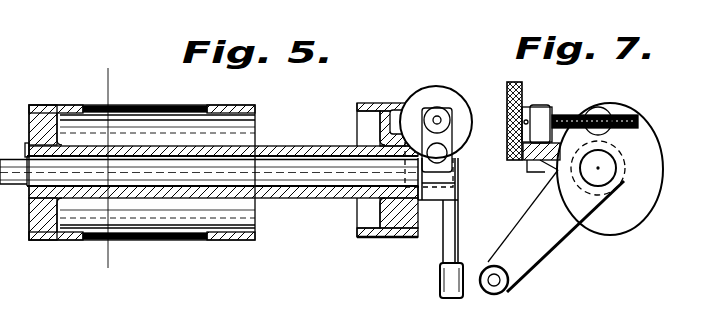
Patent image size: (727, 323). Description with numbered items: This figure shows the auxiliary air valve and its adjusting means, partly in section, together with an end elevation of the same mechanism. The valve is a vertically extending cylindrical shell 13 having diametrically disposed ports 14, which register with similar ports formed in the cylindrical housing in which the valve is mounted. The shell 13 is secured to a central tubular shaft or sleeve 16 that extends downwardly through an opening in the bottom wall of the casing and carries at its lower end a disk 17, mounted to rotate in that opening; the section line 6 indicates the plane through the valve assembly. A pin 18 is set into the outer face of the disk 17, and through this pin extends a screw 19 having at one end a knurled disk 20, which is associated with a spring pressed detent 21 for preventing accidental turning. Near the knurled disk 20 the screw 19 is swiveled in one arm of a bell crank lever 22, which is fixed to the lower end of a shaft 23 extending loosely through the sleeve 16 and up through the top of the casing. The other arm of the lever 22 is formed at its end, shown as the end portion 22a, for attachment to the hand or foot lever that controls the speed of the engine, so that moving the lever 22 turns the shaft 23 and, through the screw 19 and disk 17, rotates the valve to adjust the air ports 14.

In FIG. 5, the section line 6 is at (113, 170).
In FIG. 5, the cylindrical shell 13 is at (253, 122).
In FIG. 5, the ports 14 is at (150, 108).
In FIG. 5, the tubular shaft or sleeve 16 is at (283, 200).
In FIG. 5, the disk 17 is at (400, 238).
In FIG. 7, the disk 17 is at (623, 223).
In FIG. 7, the pin 18 is at (598, 110).
In FIG. 7, the screw 19 is at (614, 126).
In FIG. 5, the knurled disk 20 is at (508, 95).
In FIG. 7, the spring pressed detent 21 is at (520, 164).
In FIG. 5, the bell crank lever 22 is at (552, 270).
In FIG. 7, the bell crank lever 22 is at (548, 238).
In FIG. 5, the foot roller 22a is at (440, 289).
In FIG. 7, the foot roller 22a is at (503, 293).
In FIG. 5, the shaft 23 is at (337, 178).
In FIG. 7, the shaft 23 is at (605, 172).